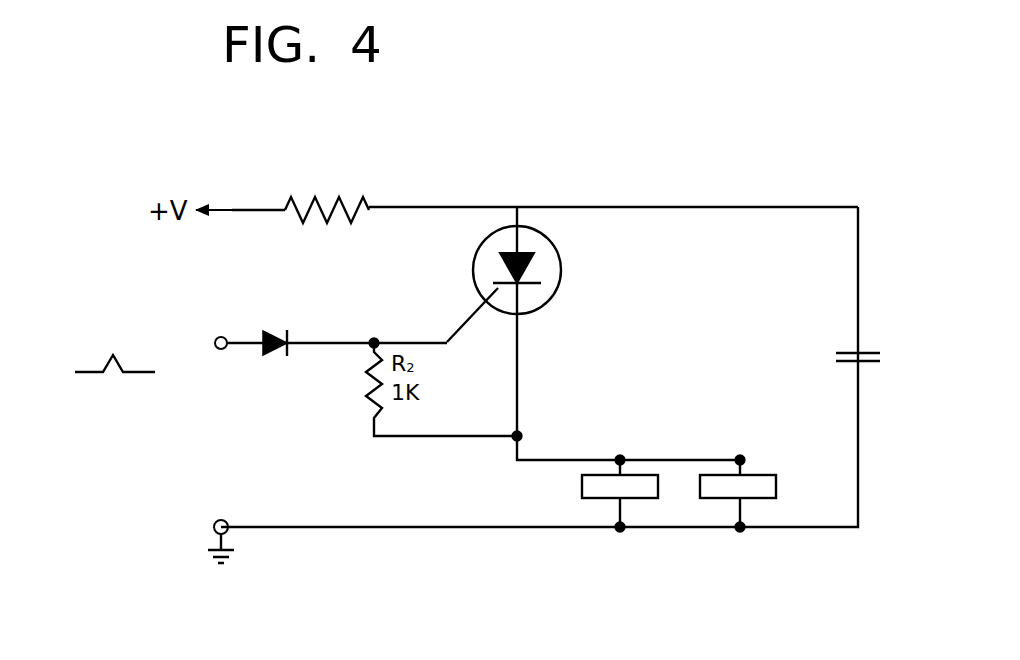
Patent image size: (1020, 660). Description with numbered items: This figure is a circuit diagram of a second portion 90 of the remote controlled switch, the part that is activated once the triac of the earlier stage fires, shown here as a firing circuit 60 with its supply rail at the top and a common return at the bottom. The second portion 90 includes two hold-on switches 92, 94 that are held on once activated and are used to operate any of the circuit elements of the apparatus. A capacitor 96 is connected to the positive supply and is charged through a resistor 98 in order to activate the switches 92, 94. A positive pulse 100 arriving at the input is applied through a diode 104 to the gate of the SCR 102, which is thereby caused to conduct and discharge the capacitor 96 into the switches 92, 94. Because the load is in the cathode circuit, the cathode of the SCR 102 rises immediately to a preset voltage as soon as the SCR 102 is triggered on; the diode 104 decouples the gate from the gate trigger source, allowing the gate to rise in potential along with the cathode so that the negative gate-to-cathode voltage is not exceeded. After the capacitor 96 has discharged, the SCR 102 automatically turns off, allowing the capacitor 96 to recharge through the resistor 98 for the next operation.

The firing circuit 60 is at (553, 181).
The second portion 90 is at (448, 192).
The hold-on switch 92 is at (638, 499).
The hold-on switch 94 is at (776, 484).
The capacitor 96 is at (863, 348).
The resistor 98 is at (345, 195).
The positive pulse 100 is at (108, 350).
The SCR 102 is at (567, 255).
The diode 104 is at (297, 332).